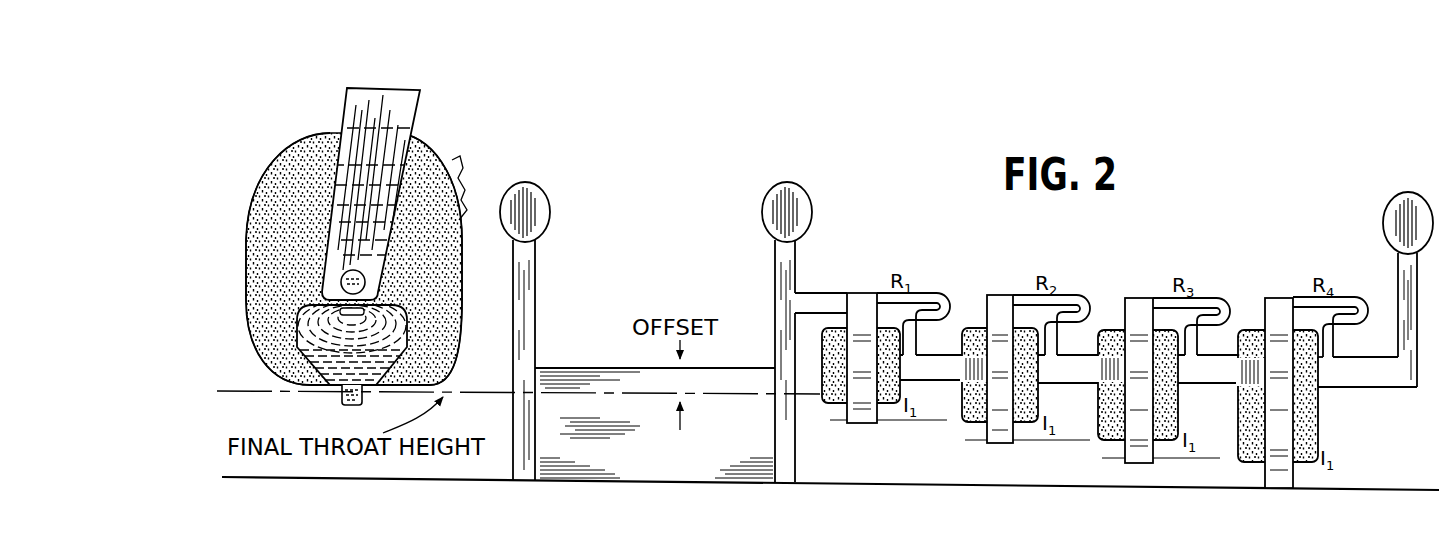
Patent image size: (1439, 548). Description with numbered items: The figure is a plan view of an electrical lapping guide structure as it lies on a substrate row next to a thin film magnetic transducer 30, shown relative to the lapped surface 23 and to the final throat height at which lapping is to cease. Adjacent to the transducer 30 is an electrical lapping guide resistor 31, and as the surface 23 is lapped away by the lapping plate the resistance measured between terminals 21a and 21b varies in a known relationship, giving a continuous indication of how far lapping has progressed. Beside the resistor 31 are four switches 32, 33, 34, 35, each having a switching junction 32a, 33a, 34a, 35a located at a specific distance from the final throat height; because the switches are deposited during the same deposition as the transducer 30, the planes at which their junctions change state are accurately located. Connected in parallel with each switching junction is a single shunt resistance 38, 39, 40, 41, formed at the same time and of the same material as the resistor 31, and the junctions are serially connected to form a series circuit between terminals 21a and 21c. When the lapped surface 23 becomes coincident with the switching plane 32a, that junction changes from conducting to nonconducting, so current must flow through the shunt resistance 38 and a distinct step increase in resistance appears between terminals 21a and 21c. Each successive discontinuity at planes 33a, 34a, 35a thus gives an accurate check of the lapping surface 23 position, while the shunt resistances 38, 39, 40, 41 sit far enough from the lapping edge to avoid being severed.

The thin film magnetic transducer 30 is at (415, 152).
The terminal 21a is at (790, 198).
The terminal 21b is at (540, 198).
The terminal 21c is at (1395, 193).
The lapped surface 23 is at (373, 522).
The electrical lapping guide resistor 31 is at (718, 467).
The switch 32 is at (1280, 297).
The switch 33 is at (1140, 297).
The switch 34 is at (1000, 294).
The switch 35 is at (865, 292).
The switching junction 32a is at (1293, 463).
The switching junction 33a is at (1157, 443).
The switching junction 34a is at (1018, 427).
The switching junction 35a is at (880, 403).
The shunt resistance 38 is at (1352, 296).
The shunt resistance 39 is at (1212, 296).
The shunt resistance 40 is at (1080, 294).
The shunt resistance 41 is at (938, 290).